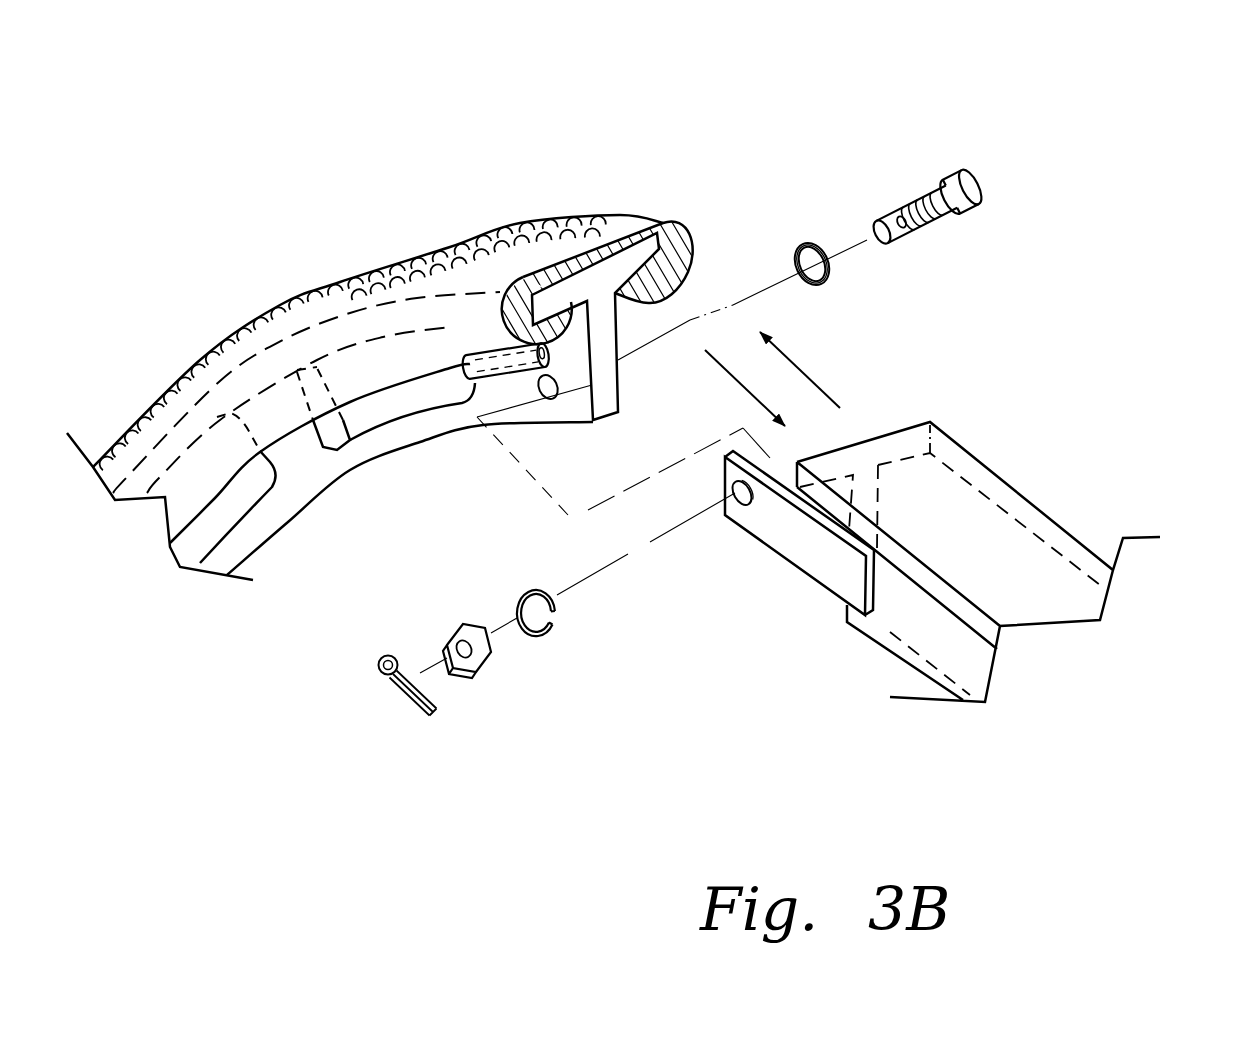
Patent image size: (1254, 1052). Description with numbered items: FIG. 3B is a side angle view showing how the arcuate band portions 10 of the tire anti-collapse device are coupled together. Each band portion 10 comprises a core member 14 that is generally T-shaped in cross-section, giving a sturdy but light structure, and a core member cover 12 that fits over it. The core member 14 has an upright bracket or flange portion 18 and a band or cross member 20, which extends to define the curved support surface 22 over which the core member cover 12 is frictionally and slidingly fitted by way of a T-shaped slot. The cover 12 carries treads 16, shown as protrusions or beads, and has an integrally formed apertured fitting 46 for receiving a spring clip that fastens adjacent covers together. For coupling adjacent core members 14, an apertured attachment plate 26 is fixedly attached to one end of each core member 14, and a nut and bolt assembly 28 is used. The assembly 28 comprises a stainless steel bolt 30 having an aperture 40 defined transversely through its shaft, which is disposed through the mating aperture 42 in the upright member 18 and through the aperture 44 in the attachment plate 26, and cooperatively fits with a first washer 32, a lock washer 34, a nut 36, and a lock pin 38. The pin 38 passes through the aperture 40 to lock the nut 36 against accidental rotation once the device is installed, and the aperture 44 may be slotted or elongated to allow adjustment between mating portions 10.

The arcuate band portion 10 is at (215, 246).
The core member cover 12 is at (636, 183).
The core member 14 is at (1013, 546).
The treads 16 is at (428, 232).
The upright bracket or flange portion 18 is at (297, 467).
The band or cross member 20 is at (672, 258).
The curved support surface 22 is at (963, 564).
The apertured attachment plate 26 is at (734, 529).
The nut and bolt assembly 28 is at (411, 747).
The bolt 30 is at (894, 194).
The first washer 32 is at (786, 215).
The lock washer 34 is at (556, 656).
The nut 36 is at (486, 700).
The lock pin 38 is at (433, 741).
The aperture 40 is at (903, 236).
The mating aperture 42 is at (571, 391).
The aperture 44 is at (731, 492).
The apertured fitting 46 is at (500, 396).